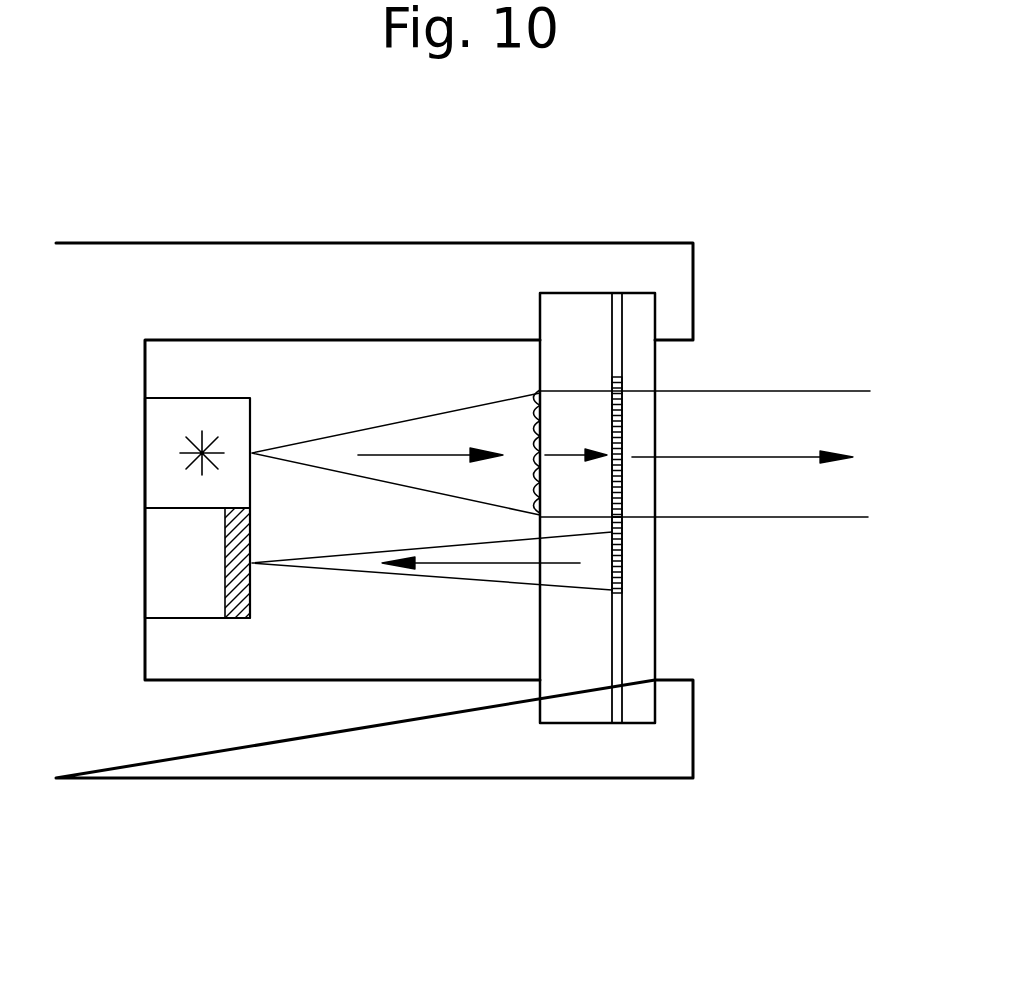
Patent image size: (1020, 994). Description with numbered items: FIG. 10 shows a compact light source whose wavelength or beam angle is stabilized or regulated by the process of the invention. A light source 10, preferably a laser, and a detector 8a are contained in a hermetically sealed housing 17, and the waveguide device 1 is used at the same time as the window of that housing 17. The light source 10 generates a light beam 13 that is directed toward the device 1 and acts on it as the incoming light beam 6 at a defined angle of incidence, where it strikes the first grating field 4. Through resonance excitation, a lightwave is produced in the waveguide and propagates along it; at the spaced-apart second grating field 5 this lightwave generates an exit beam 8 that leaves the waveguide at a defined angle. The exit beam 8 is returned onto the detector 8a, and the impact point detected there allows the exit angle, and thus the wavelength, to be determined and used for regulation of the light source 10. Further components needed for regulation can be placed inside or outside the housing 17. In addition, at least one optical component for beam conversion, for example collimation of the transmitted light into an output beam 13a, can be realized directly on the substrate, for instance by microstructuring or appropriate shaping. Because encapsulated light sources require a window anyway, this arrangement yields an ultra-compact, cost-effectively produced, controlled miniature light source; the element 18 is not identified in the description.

The device 1 is at (578, 708).
The grating field 4 is at (622, 422).
The grating field 5 is at (622, 565).
The light beam 6 is at (567, 452).
The exit beam 8 is at (443, 570).
The detector 8a is at (185, 600).
The light source 10 is at (202, 415).
The light beam 13 is at (420, 415).
The beam 13a is at (768, 457).
The housing 17 is at (312, 735).
The lens 18 is at (536, 390).